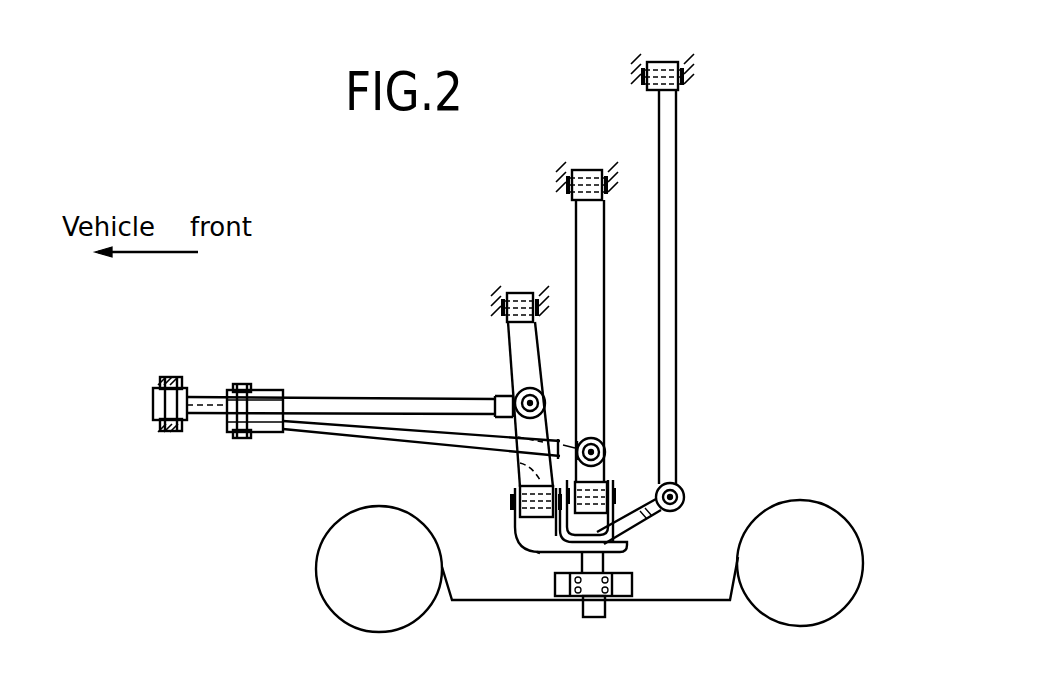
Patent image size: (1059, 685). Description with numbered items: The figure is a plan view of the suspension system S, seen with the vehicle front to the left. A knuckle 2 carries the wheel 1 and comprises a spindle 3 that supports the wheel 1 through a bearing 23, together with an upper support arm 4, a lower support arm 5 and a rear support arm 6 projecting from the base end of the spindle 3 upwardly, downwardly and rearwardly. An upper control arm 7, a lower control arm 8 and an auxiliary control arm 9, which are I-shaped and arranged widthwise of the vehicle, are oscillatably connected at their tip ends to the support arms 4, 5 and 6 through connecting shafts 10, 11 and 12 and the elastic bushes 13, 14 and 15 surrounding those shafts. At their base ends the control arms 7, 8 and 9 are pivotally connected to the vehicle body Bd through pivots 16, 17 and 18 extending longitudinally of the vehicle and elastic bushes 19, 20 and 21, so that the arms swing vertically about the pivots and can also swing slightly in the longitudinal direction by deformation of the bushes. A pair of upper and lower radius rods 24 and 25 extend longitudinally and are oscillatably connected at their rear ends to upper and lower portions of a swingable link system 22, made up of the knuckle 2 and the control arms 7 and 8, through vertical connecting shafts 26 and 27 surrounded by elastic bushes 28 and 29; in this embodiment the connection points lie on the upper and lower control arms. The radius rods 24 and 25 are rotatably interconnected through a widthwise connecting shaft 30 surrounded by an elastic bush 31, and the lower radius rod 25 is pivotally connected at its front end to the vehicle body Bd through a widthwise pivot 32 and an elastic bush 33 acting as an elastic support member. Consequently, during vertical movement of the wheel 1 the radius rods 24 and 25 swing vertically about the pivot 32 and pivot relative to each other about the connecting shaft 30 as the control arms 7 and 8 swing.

The wheel 1 is at (316, 570).
The knuckle 2 is at (533, 543).
The spindle 3 is at (592, 588).
The upper support arm 4 is at (518, 530).
The lower support arm 5 is at (585, 528).
The rear support arm 6 is at (648, 522).
The upper control arm 7 is at (510, 344).
The lower control arm 8 is at (576, 243).
The auxiliary control arm 9 is at (678, 257).
The connecting shaft 10 is at (512, 502).
The connecting shaft 11 is at (612, 500).
The connecting shaft 12 is at (681, 486).
The elastic bush 13 is at (518, 463).
The elastic bush 14 is at (612, 461).
The elastic bush 15 is at (685, 498).
The pivot 16 is at (507, 300).
The pivot 17 is at (572, 178).
The pivot 18 is at (648, 68).
The elastic bush 19 is at (517, 293).
The elastic bush 20 is at (587, 170).
The elastic bush 21 is at (662, 62).
The swingable link system 22 is at (537, 554).
The bearing 23 is at (608, 597).
The upper radius rod 24 is at (363, 403).
The lower radius rod 25 is at (387, 436).
The connecting shaft 26 is at (542, 392).
The connecting shaft 27 is at (594, 437).
The elastic bush 28 is at (518, 390).
The elastic bush 29 is at (604, 432).
The connecting shaft 30 is at (243, 437).
The elastic bush 31 is at (233, 425).
The pivot 32 is at (168, 433).
The elastic bush 33 is at (153, 399).
The vehicle body Bd is at (696, 77).
The suspension system S is at (362, 246).